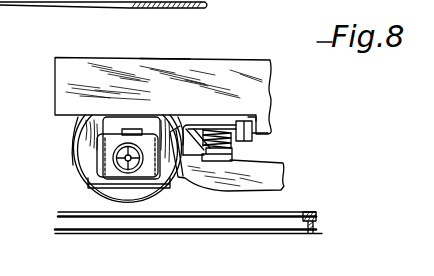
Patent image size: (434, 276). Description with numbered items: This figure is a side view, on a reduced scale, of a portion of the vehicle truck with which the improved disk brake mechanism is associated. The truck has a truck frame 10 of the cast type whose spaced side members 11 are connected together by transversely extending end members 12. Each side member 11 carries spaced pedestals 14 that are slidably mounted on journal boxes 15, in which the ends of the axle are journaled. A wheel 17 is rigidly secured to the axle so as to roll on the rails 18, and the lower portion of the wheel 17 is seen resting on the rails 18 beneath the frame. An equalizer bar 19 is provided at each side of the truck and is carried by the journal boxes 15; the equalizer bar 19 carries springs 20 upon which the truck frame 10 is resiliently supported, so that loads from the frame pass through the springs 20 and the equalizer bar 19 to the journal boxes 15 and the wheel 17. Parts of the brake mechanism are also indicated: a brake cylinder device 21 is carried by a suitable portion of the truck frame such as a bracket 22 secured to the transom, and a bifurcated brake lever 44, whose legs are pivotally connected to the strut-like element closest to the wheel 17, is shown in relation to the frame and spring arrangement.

The truck frame 10 is at (216, 63).
The side members 11 is at (163, 65).
The end members 12 is at (55, 84).
The pedestals 14 is at (91, 148).
The journal boxes 15 is at (112, 176).
The wheels 17 is at (72, 172).
The rails 18 is at (66, 226).
The equalizer bar 19 is at (275, 181).
The springs 20 is at (236, 147).
The brake cylinder device 21 is at (236, 152).
The bracket 22 is at (242, 126).
The brake lever 44 is at (205, 130).